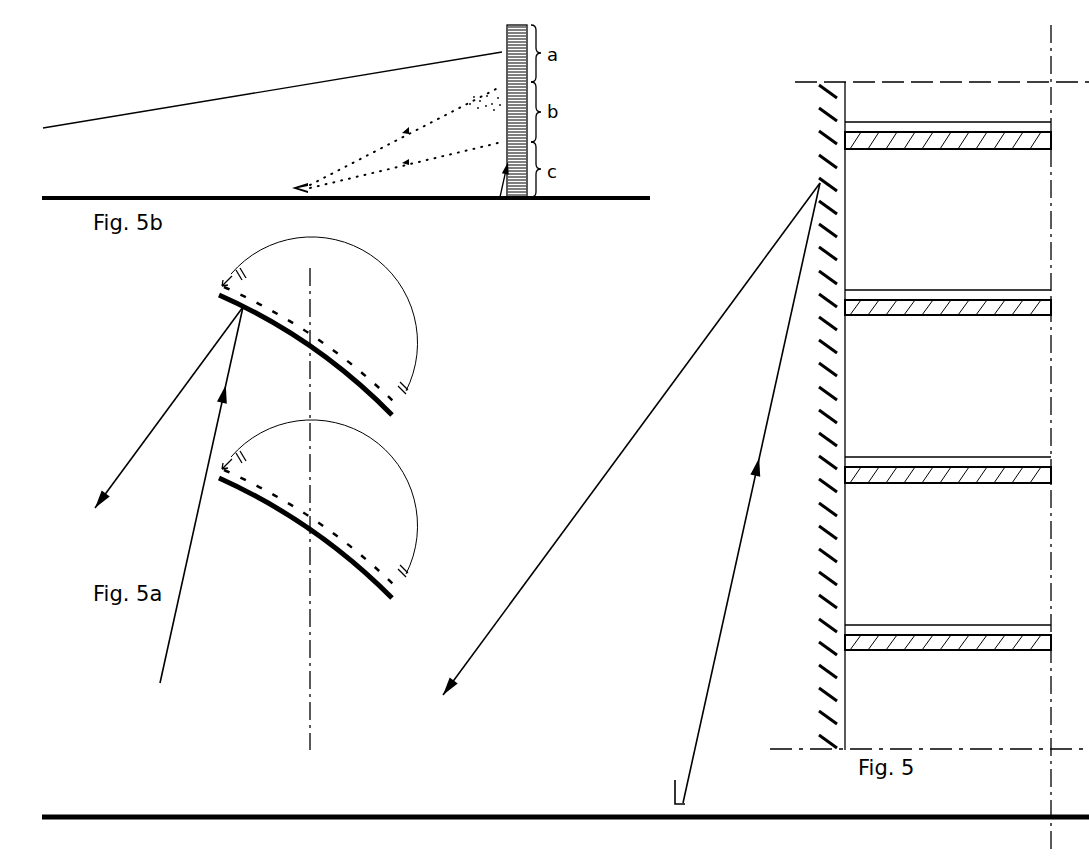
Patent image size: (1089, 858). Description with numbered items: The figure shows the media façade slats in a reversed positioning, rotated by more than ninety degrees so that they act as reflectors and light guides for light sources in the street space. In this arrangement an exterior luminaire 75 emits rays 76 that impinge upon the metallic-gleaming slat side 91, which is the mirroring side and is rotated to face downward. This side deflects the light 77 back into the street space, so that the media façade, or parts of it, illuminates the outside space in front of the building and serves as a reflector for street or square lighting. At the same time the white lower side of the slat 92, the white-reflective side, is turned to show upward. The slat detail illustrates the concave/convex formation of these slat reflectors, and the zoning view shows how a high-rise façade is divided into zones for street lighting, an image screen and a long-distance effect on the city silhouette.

In FIG. 5, the exterior luminaire 75 is at (688, 787).
In FIG. 5A, the rays 76 is at (190, 549).
In FIG. 5, the rays 76 is at (712, 680).
In FIG. 5A, the deflected light 77 is at (159, 423).
In FIG. 5, the deflected light 77 is at (521, 592).
In FIG. 5A, the metallic-gleaming slat side 91 is at (245, 492).
In FIG. 5A, the white lower side of the slat 92 is at (268, 499).